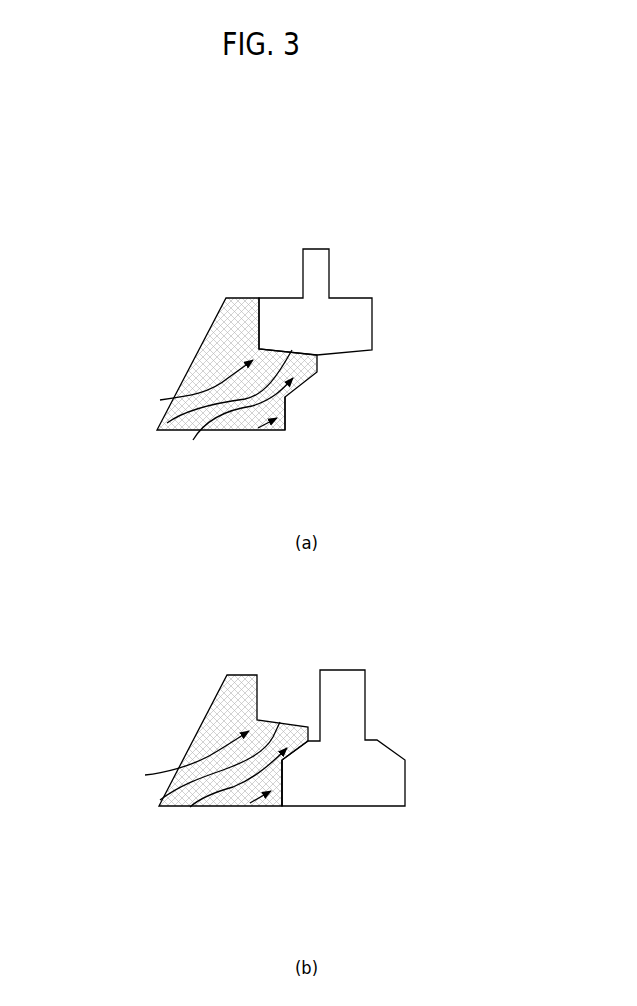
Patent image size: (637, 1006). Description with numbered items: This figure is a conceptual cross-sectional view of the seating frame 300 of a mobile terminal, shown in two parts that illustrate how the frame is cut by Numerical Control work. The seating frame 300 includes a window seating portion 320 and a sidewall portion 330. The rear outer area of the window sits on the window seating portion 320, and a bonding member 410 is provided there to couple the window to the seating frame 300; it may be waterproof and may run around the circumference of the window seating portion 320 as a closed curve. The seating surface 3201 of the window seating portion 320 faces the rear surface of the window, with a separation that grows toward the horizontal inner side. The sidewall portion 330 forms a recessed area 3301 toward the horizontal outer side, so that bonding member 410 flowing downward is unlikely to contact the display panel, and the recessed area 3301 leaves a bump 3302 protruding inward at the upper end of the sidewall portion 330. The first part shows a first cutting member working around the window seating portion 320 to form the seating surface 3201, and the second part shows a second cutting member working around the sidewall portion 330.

The seating frame 300 is at (178, 317).
The bonding member 410 is at (278, 263).
The window seating portion 320 is at (160, 400).
The seating surface 3201 is at (167, 423).
The sidewall portion 330 is at (258, 428).
The recessed area 3301 is at (310, 422).
The bump 3302 is at (193, 440).